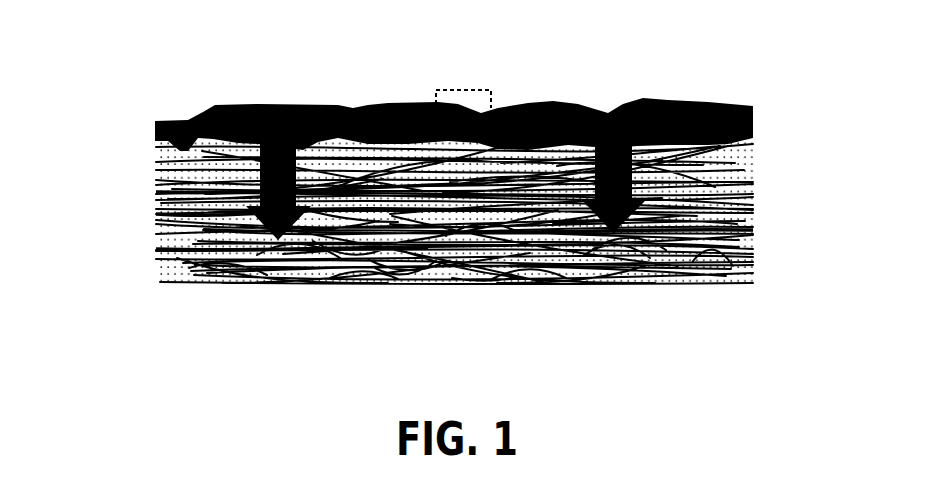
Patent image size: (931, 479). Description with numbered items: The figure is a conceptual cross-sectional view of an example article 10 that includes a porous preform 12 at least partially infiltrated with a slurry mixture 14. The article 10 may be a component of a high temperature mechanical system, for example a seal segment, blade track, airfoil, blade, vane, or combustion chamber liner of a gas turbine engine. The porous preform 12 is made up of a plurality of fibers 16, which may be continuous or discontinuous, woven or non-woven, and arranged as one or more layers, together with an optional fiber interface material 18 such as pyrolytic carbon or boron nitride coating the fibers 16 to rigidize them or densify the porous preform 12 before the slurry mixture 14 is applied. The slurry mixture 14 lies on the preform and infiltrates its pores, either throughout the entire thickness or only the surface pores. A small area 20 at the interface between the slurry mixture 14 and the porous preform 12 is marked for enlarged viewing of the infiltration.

The article 10 is at (444, 150).
The porous preform 12 is at (445, 210).
The slurry mixture 14 is at (250, 97).
The fibers 16 is at (745, 218).
The fiber interface material 18 is at (733, 151).
The area 20 is at (424, 70).